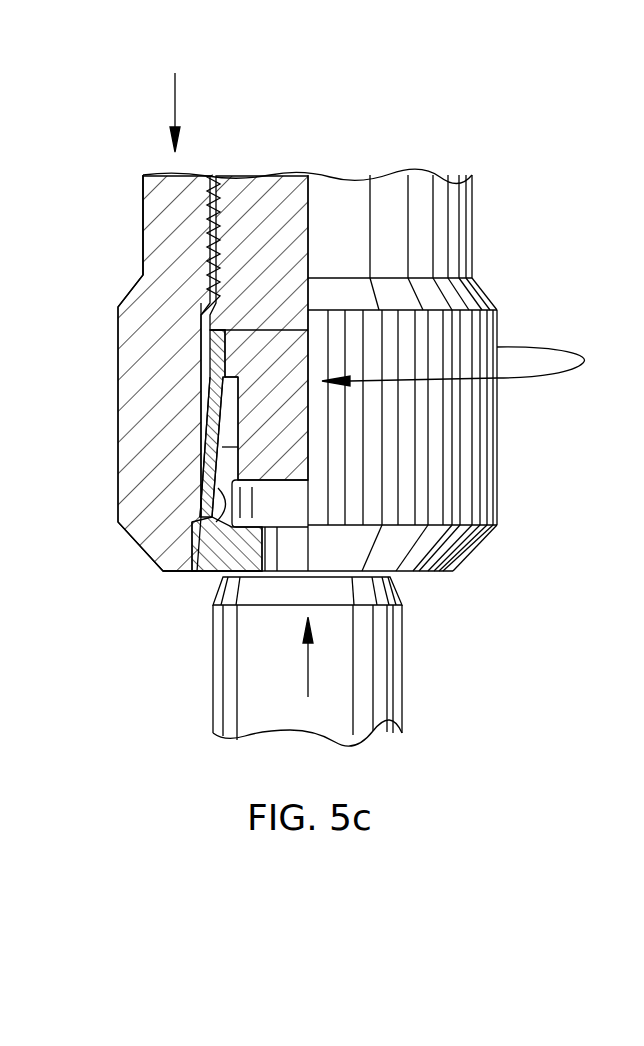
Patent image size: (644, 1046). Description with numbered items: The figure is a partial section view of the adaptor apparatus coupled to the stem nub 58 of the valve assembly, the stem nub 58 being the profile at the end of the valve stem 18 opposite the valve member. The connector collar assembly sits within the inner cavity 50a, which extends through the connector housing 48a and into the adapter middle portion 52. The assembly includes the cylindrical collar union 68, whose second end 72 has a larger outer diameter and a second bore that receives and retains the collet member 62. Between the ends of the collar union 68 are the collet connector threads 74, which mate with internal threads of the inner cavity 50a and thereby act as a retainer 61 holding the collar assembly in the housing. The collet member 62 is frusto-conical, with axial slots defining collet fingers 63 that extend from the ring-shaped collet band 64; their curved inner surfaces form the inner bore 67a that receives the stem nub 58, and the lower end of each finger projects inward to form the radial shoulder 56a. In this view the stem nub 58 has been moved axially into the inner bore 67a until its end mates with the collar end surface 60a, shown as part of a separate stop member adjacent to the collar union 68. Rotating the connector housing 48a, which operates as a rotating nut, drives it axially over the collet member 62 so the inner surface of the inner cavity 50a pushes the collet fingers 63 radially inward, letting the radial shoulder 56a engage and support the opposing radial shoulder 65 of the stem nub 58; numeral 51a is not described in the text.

The valve stem 18 is at (402, 690).
The connector housing 48a is at (128, 320).
The inner cavity 50a is at (230, 442).
The second fitting body 51a is at (437, 571).
The adapter middle portion 52 is at (150, 198).
The radial shoulder 56a is at (205, 500).
The stem nub 58 is at (263, 502).
The collar end surface 60a is at (238, 497).
The retainer 61 is at (180, 241).
The collet member 62 is at (185, 585).
The collet fingers 63 is at (227, 538).
The collet band 64 is at (212, 368).
The opposing radial shoulder 65 is at (217, 573).
The inner bore 67a is at (245, 450).
The collar union 68 is at (268, 195).
The second end 72 is at (207, 395).
The collet connector threads 74 is at (193, 180).